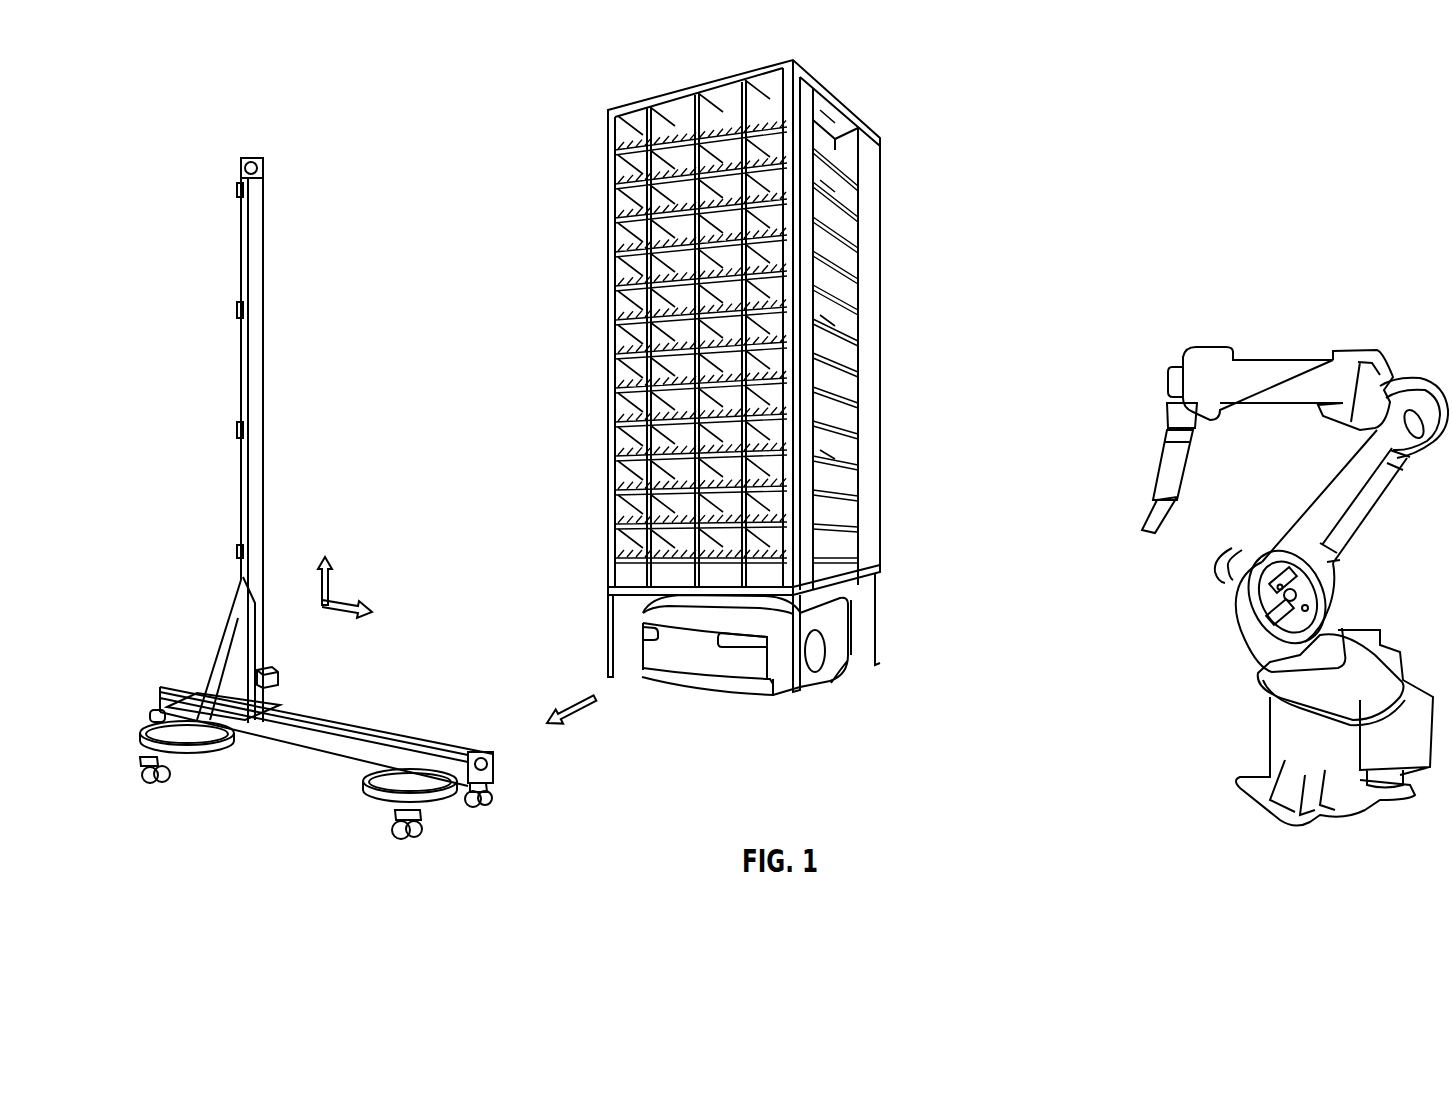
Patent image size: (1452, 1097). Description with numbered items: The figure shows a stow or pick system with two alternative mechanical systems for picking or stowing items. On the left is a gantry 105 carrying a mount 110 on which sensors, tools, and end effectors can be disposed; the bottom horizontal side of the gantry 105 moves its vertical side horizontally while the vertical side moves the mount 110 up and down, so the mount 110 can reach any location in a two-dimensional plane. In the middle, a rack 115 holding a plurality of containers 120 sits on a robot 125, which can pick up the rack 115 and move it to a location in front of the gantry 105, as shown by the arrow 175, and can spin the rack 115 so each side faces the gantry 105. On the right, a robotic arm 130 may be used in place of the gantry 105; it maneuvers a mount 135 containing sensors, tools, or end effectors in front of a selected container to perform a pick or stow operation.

The gantry 105 is at (216, 156).
The mount 110 is at (281, 679).
The rack 115 is at (803, 80).
The containers 120 is at (830, 313).
The robot 125 is at (807, 688).
The robotic arm 130 is at (1268, 375).
The mount 135 is at (1155, 463).
The arrow 175 is at (577, 698).